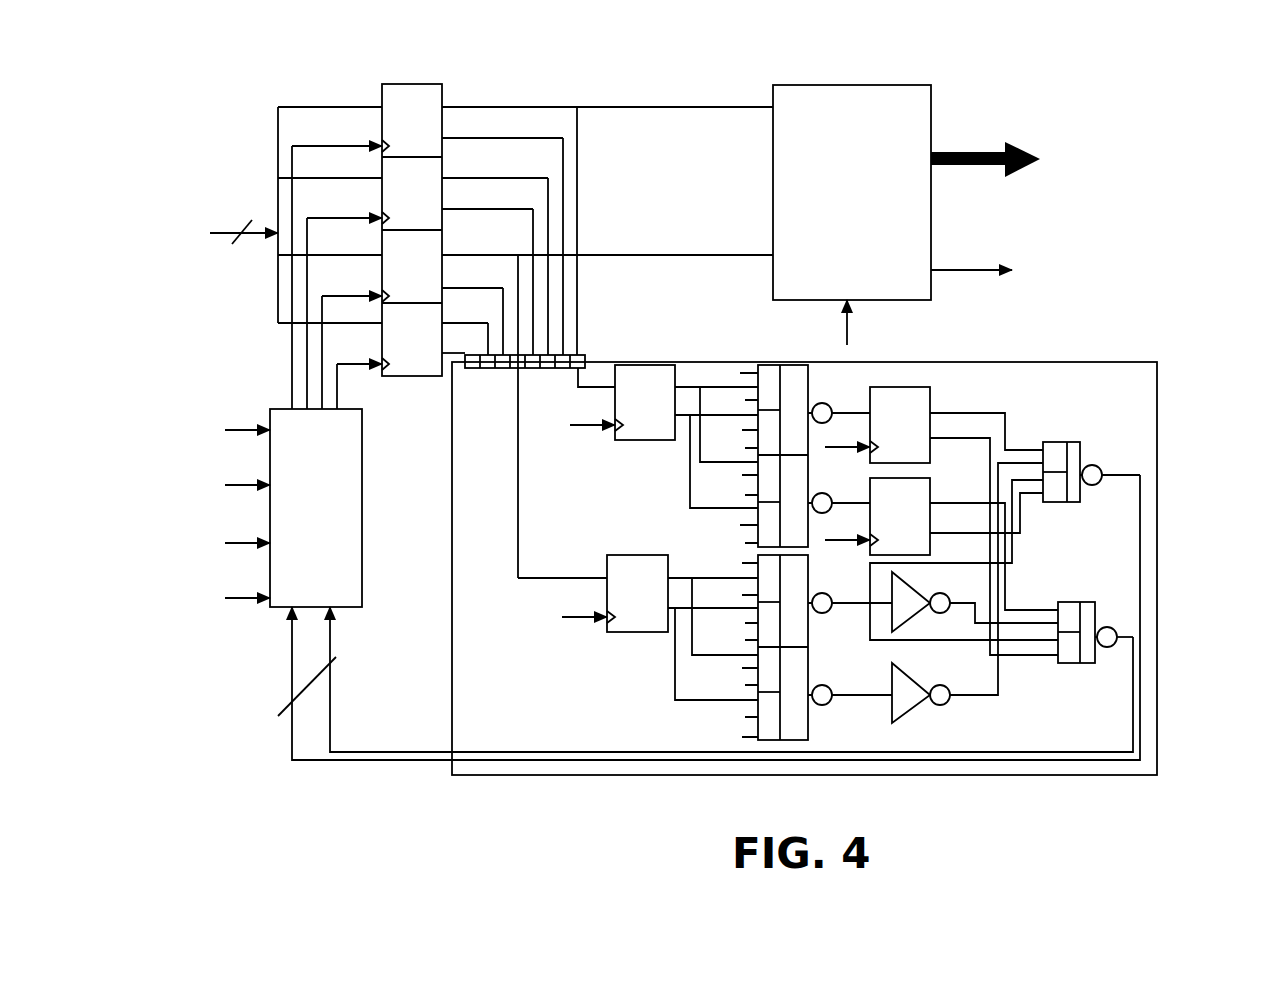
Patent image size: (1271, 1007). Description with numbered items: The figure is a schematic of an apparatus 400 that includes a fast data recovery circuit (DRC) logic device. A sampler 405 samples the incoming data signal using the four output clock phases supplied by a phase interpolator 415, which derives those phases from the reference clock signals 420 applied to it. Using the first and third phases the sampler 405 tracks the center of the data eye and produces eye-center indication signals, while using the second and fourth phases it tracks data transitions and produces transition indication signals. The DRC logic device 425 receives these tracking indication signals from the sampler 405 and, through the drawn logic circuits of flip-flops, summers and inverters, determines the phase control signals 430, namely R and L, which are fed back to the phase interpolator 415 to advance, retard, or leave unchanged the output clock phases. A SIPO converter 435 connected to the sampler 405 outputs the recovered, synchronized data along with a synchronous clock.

The apparatus 400 is at (690, 38).
The sampler 405 is at (362, 78).
The phase interpolator 415 is at (275, 409).
The reference clock signals 420 is at (186, 553).
The DRC logic device 425 is at (1172, 379).
The phase control signals 430 is at (302, 690).
The SIPO converter 435 is at (905, 85).